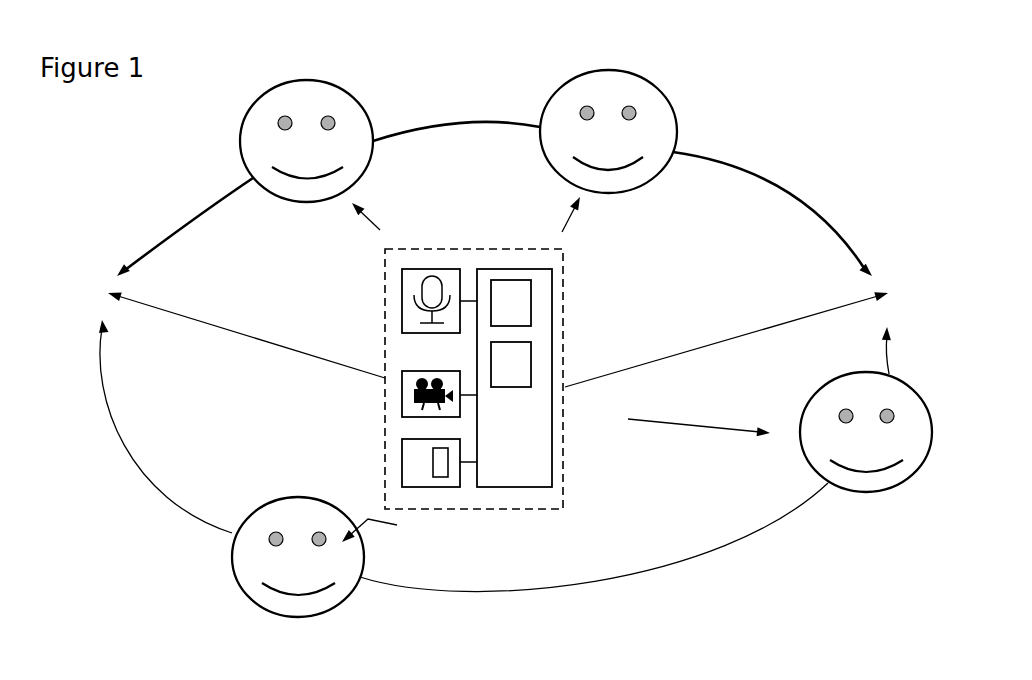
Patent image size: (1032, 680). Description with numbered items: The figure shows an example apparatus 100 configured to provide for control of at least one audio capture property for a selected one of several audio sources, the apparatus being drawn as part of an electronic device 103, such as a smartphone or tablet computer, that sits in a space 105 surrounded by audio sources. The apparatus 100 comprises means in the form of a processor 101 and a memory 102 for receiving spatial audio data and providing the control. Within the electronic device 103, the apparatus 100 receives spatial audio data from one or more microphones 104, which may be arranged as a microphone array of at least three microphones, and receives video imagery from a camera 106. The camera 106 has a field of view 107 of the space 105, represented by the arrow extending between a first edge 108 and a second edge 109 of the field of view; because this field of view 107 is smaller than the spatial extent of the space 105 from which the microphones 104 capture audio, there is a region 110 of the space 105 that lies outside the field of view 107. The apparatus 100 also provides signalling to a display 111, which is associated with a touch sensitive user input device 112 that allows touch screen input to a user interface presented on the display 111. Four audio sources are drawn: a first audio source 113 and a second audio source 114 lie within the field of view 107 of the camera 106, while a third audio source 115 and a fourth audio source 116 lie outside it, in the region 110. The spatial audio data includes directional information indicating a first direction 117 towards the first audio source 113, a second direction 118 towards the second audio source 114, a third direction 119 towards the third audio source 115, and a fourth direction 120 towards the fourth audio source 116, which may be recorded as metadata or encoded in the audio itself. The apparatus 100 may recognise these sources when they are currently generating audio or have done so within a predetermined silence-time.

The apparatus 100 is at (517, 258).
The processor 101 is at (512, 298).
The memory 102 is at (519, 353).
The electronic device 103 is at (430, 238).
The microphones 104 is at (412, 292).
The space 105 is at (100, 139).
The camera 106 is at (415, 400).
The field of view 107 is at (496, 113).
The first edge of the field of view 108 is at (193, 323).
The second edge of the field of view 109 is at (827, 318).
The region 110 is at (579, 594).
The display 111 is at (420, 462).
The touch sensitive user input device 112 is at (440, 478).
The first audio source 113 is at (298, 75).
The second audio source 114 is at (612, 60).
The third audio source 115 is at (294, 614).
The fourth audio source 116 is at (870, 498).
The first direction 117 is at (362, 225).
The second direction 118 is at (573, 210).
The third direction 119 is at (384, 542).
The fourth direction 120 is at (715, 432).